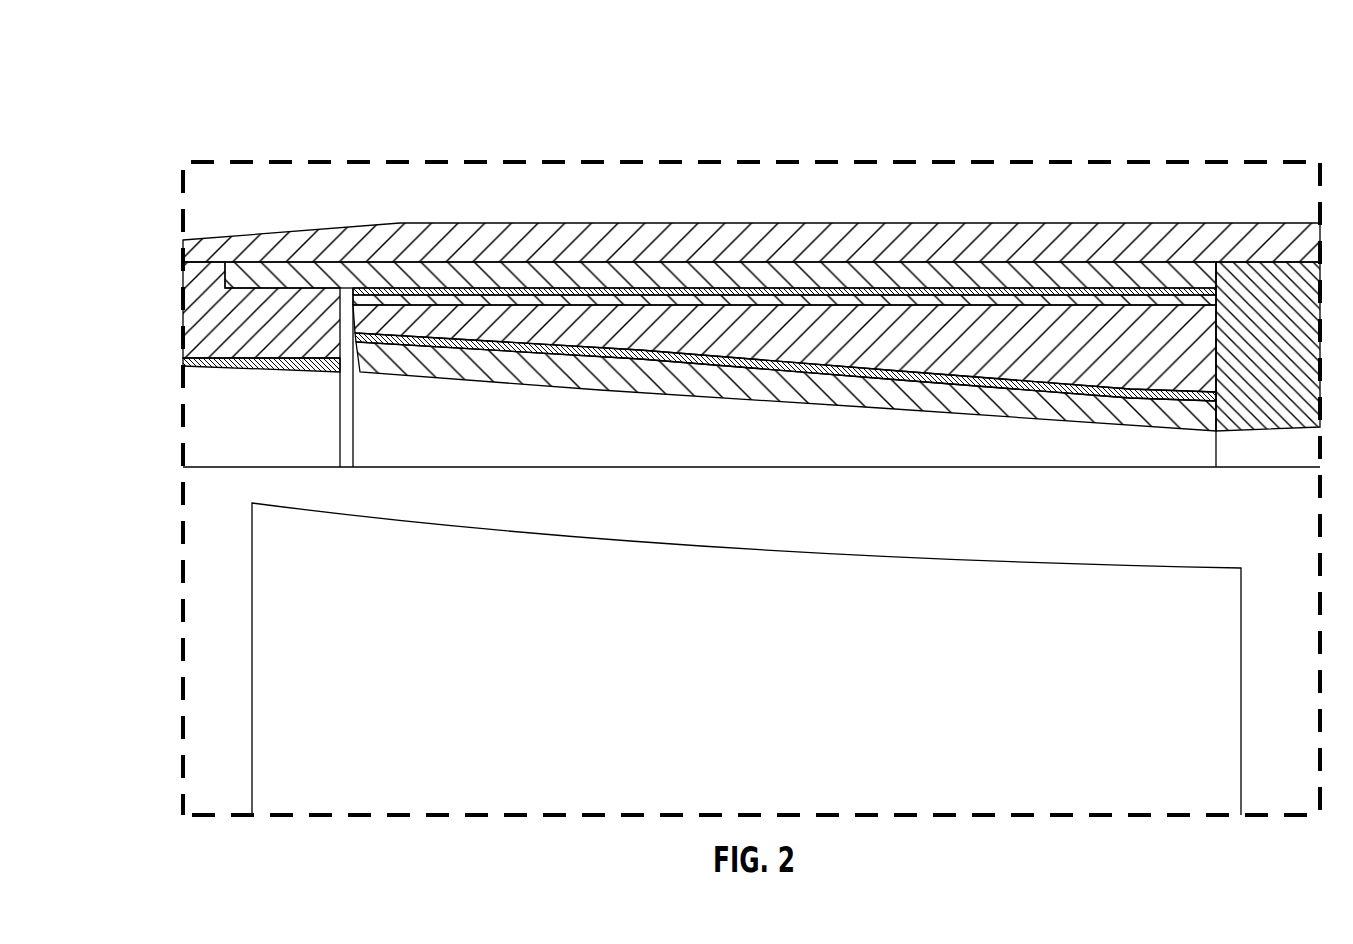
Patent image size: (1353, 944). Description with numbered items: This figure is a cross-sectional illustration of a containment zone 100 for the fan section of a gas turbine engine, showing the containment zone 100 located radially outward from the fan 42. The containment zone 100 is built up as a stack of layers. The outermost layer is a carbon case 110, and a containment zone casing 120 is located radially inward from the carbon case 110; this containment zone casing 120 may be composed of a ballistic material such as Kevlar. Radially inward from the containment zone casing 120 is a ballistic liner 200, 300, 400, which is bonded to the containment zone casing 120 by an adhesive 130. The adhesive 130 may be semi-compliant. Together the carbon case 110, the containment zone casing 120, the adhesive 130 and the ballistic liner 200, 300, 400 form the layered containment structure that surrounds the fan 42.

The containment zone 100 is at (1198, 86).
The carbon case 110 is at (427, 242).
The containment zone casing 120 is at (567, 275).
The adhesive 130 is at (692, 278).
The ballistic liner 200 is at (922, 288).
The ballistic liner 300 is at (785, 243).
The ballistic liner 400 is at (786, 258).
The fan 42 is at (767, 695).